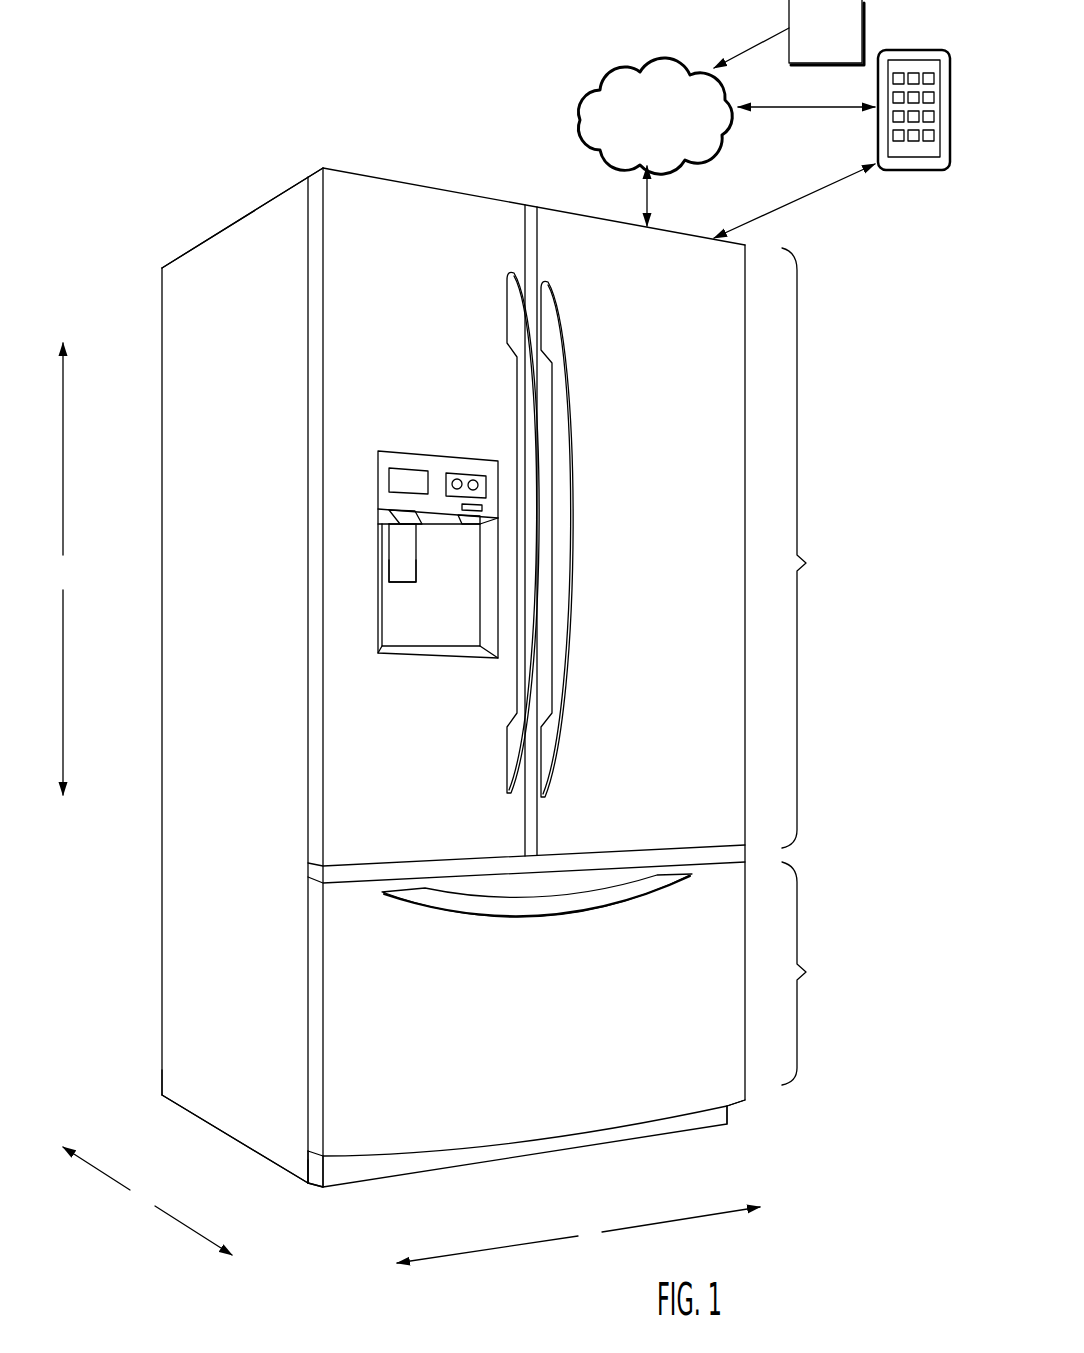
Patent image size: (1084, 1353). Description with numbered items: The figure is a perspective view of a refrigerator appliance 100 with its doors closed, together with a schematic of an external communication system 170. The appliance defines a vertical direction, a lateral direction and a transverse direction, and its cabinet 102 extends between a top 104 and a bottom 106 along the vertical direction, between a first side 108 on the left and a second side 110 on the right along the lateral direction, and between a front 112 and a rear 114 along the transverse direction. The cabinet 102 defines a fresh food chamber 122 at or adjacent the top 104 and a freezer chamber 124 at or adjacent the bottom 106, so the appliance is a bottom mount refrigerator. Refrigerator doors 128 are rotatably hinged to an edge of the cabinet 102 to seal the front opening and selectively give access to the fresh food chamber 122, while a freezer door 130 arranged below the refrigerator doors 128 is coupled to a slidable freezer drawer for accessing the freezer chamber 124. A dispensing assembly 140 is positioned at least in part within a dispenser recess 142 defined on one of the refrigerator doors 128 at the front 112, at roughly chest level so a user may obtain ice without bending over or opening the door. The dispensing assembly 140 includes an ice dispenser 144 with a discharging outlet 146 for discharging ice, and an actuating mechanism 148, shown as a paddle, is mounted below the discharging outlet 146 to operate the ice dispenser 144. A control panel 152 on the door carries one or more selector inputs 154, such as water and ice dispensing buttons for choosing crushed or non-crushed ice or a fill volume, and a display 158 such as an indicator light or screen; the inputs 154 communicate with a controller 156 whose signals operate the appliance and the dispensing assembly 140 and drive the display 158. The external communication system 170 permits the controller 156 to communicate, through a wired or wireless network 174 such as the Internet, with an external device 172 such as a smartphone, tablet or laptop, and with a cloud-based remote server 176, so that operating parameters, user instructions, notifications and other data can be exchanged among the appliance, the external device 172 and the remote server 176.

The refrigerator appliance 100 is at (268, 104).
The cabinet 102 is at (240, 262).
The top 104 is at (158, 267).
The bottom 106 is at (148, 1094).
The first side 108 is at (321, 1196).
The second side 110 is at (729, 1131).
The front 112 is at (302, 1191).
The rear 114 is at (160, 1104).
The fresh food chamber 122 is at (814, 548).
The freezer chamber 124 is at (814, 973).
The refrigerator doors 128 is at (446, 315).
The freezer door 130 is at (583, 1012).
The dispensing assembly 140 is at (391, 414).
The dispenser recess 142 is at (443, 646).
The ice dispenser 144 is at (383, 577).
The discharging outlet 146 is at (400, 527).
The actuating mechanism 148 is at (405, 567).
The control panel 152 is at (377, 473).
The selector inputs 154 is at (458, 480).
The controller 156 is at (487, 482).
The display 158 is at (408, 476).
The external communication system 170 is at (578, 53).
The external device 172 is at (913, 171).
The network 174 is at (670, 125).
The remote server 176 is at (840, 42).